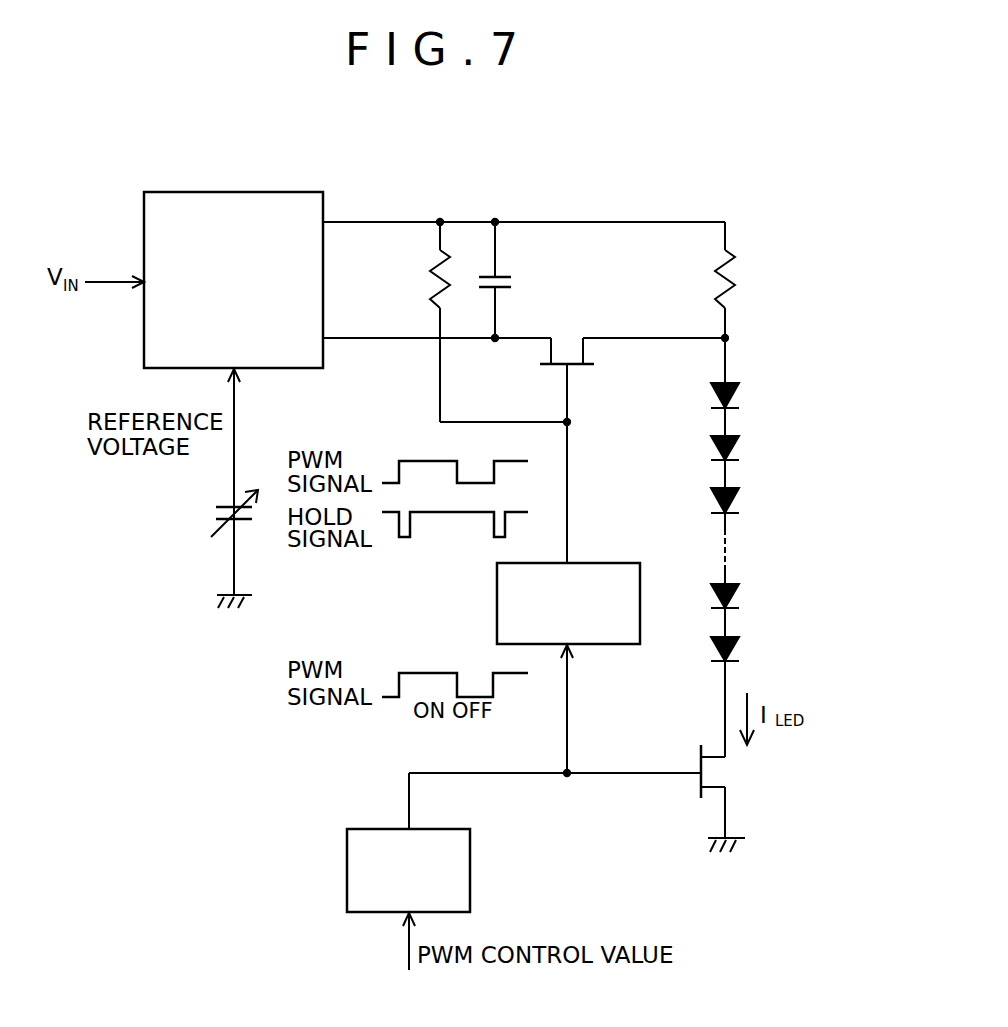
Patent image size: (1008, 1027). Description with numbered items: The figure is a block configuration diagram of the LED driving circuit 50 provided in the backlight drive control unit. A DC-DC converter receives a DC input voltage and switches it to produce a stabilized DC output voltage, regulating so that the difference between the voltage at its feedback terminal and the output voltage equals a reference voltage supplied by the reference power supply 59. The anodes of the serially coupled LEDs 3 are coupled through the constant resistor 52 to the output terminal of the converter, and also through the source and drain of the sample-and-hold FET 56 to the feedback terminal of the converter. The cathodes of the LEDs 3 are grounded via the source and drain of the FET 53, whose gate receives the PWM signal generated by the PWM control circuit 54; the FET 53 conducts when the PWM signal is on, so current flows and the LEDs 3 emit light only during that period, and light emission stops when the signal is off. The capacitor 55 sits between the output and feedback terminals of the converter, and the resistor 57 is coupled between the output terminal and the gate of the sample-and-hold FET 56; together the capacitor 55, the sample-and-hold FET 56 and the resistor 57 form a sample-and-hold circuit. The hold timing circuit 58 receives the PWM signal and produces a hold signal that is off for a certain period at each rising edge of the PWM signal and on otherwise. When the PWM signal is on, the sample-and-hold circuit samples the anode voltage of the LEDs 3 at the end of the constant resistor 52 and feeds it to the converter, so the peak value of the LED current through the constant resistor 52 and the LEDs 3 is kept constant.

The LED driving circuit 50 is at (505, 134).
The LEDs 3 is at (762, 373).
The constant resistor (Rc) 52 is at (737, 271).
The field effect transistor (FET) 53 is at (722, 773).
The PWM control circuit 54 is at (376, 829).
The capacitor 55 is at (518, 282).
The sample-and-hold FET 56 is at (590, 368).
The resistor 57 is at (432, 281).
The hold timing circuit 58 is at (234, 192).
The reference power supply 59 is at (212, 513).